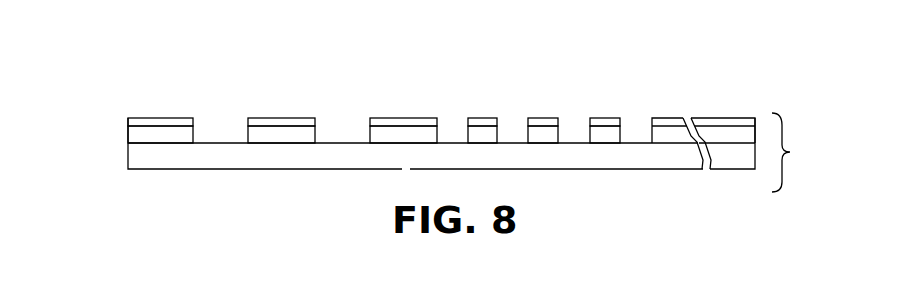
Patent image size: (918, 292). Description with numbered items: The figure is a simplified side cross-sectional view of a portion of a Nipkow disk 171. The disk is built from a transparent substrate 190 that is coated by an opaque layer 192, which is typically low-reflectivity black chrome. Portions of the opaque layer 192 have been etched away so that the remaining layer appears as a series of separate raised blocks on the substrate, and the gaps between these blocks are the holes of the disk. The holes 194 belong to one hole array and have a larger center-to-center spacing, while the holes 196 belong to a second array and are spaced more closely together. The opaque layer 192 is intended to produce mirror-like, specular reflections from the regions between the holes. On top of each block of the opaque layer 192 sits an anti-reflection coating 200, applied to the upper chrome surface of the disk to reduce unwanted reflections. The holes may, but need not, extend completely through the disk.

The Nipkow disk 171 is at (790, 152).
The transparent substrate 190 is at (128, 155).
The opaque layer 192 is at (132, 135).
The holes 194 is at (220, 141).
The holes 196 is at (452, 139).
The anti-reflection coating 200 is at (155, 121).